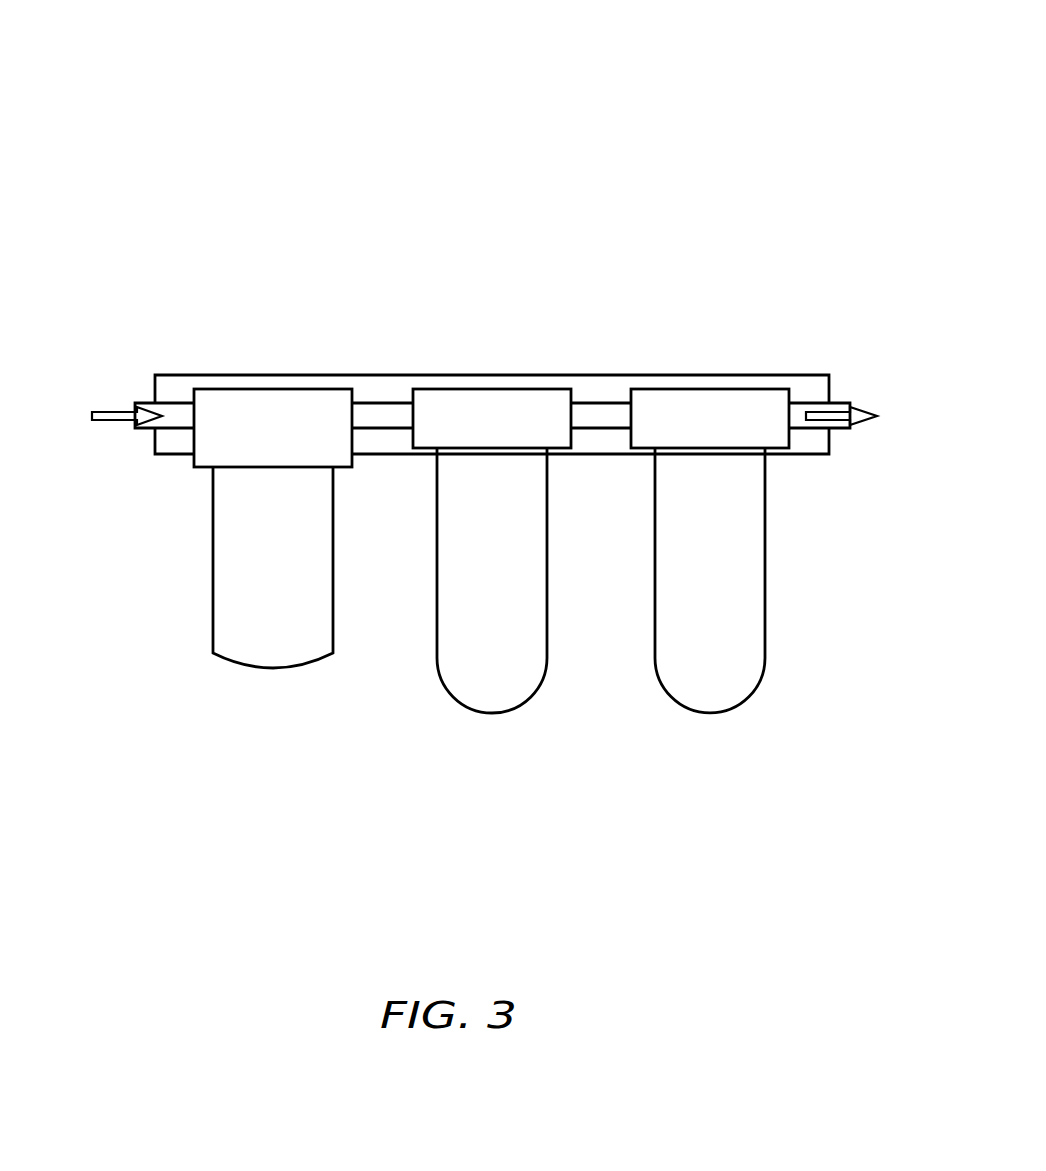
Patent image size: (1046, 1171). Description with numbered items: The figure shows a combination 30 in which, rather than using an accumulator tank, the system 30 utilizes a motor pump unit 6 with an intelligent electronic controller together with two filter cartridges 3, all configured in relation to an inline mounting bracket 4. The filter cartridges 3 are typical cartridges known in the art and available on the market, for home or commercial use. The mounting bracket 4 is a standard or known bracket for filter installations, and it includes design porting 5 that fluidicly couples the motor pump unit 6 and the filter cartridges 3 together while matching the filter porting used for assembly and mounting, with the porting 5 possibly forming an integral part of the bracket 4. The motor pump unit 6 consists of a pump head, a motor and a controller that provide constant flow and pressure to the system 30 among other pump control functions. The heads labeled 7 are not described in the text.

The combination 30 is at (736, 100).
The filter cartridges 3 is at (547, 682).
The mounting bracket 4 is at (686, 375).
The porting 5 is at (817, 347).
The motor pump unit 6 is at (273, 668).
The filter/pump heads 7 is at (202, 460).